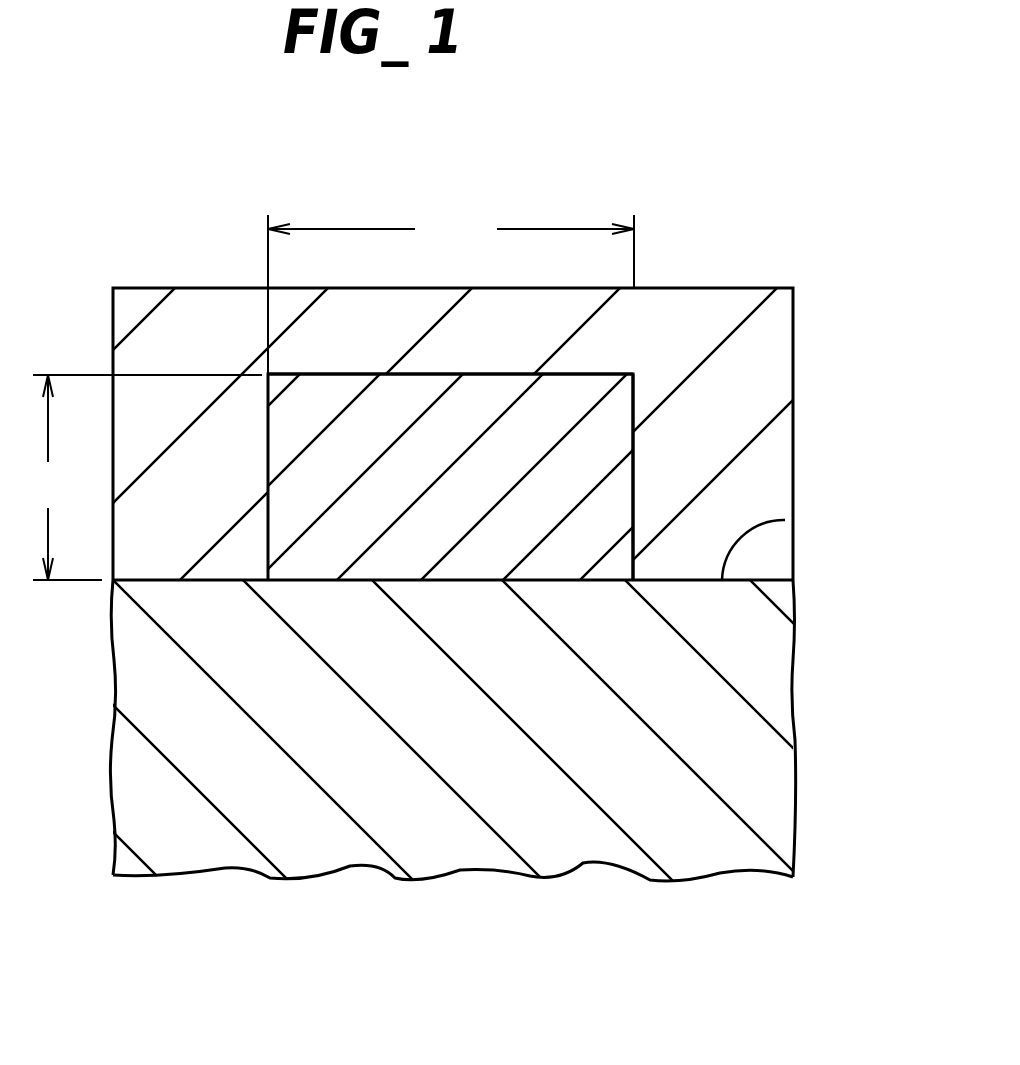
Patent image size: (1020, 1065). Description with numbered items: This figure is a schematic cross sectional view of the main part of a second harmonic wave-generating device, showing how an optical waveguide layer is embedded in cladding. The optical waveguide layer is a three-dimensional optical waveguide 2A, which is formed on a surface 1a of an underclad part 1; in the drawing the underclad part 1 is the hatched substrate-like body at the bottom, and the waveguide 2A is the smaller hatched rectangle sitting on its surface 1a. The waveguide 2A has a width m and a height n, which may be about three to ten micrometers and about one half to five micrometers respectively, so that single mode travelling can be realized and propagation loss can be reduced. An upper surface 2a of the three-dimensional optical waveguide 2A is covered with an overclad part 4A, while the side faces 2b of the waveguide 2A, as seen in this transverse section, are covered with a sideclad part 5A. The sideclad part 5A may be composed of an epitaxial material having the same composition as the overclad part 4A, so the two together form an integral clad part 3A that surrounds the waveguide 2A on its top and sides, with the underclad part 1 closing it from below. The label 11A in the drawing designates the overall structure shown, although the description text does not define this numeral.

The underclad part 1 is at (758, 652).
The surface of the underclad part 1a is at (785, 520).
The three-dimensional optical waveguide 2A is at (527, 437).
The upper surface of the three-dimensional optical waveguide 2a is at (510, 372).
The side faces of the three-dimensional optical waveguide 2b is at (633, 477).
The integral clad part 3A is at (752, 286).
The overclad part 4A is at (337, 313).
The sideclad part 5A is at (723, 428).
The thin film structure 11A is at (692, 242).